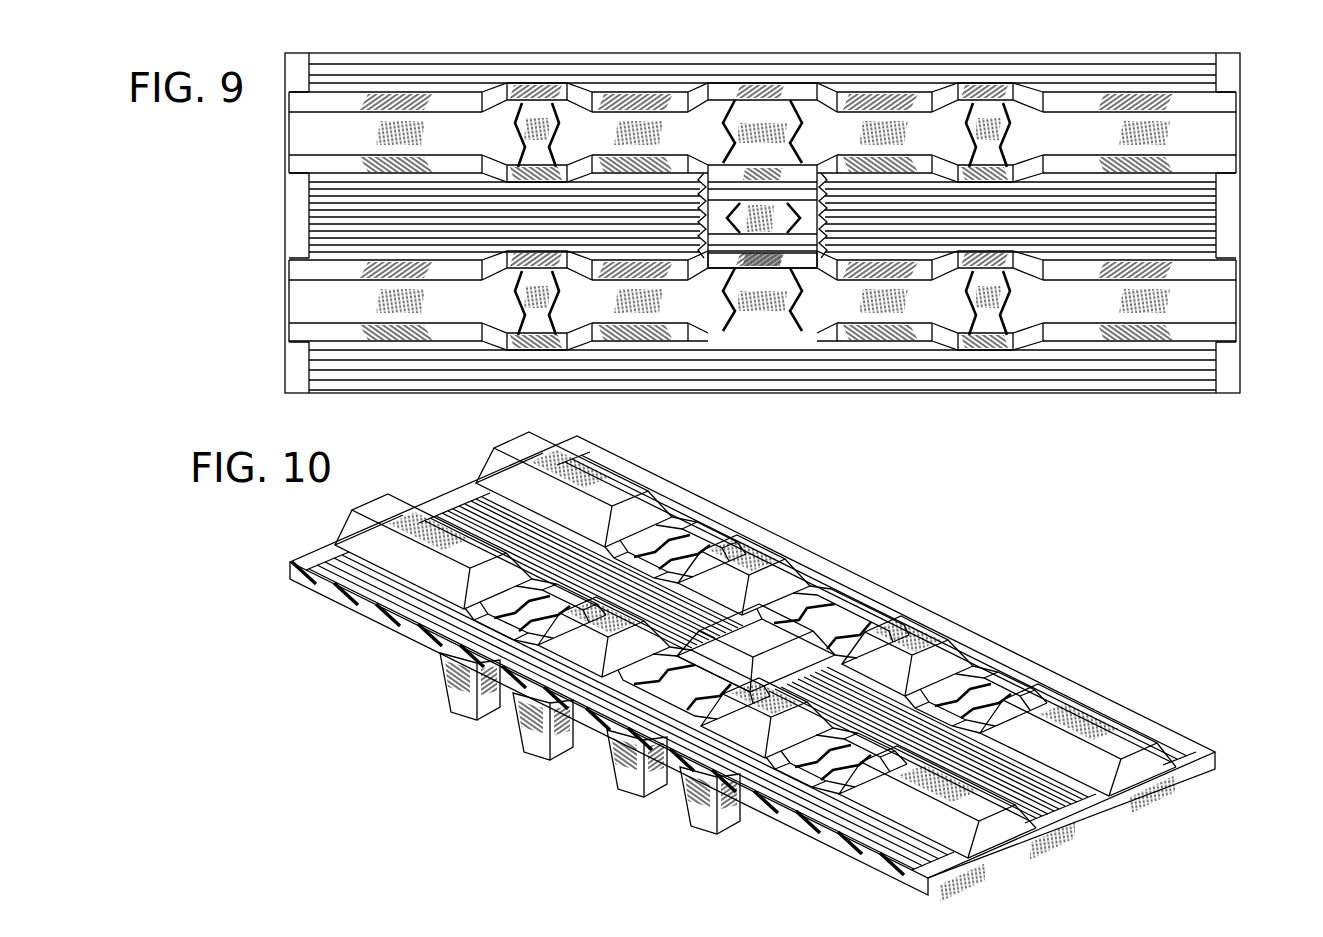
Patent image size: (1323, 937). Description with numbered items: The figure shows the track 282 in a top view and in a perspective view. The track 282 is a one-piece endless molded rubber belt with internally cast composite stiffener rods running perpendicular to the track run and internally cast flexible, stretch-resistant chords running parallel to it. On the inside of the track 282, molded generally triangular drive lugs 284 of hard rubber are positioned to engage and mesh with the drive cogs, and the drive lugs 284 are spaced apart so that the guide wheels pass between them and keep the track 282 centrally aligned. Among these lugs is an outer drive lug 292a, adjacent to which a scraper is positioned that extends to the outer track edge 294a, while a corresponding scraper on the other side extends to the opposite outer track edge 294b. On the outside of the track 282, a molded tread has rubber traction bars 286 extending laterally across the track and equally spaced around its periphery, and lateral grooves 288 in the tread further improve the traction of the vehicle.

In FIG. 9, the track 282 is at (748, 264).
In FIG. 10, the track 282 is at (748, 668).
In FIG. 10, the drive lugs 284 is at (600, 775).
In FIG. 9, the traction bars 286 is at (955, 312).
In FIG. 10, the traction bars 286 is at (980, 797).
In FIG. 9, the lateral grooves 288 is at (888, 372).
In FIG. 10, the lateral grooves 288 is at (977, 790).
In FIG. 10, the outer drive lug 292a is at (443, 678).
In FIG. 9, the outer track edge 294a is at (283, 321).
In FIG. 10, the outer track edge 294a is at (332, 558).
In FIG. 9, the outer track edge 294b is at (1242, 331).
In FIG. 10, the outer track edge 294b is at (957, 850).